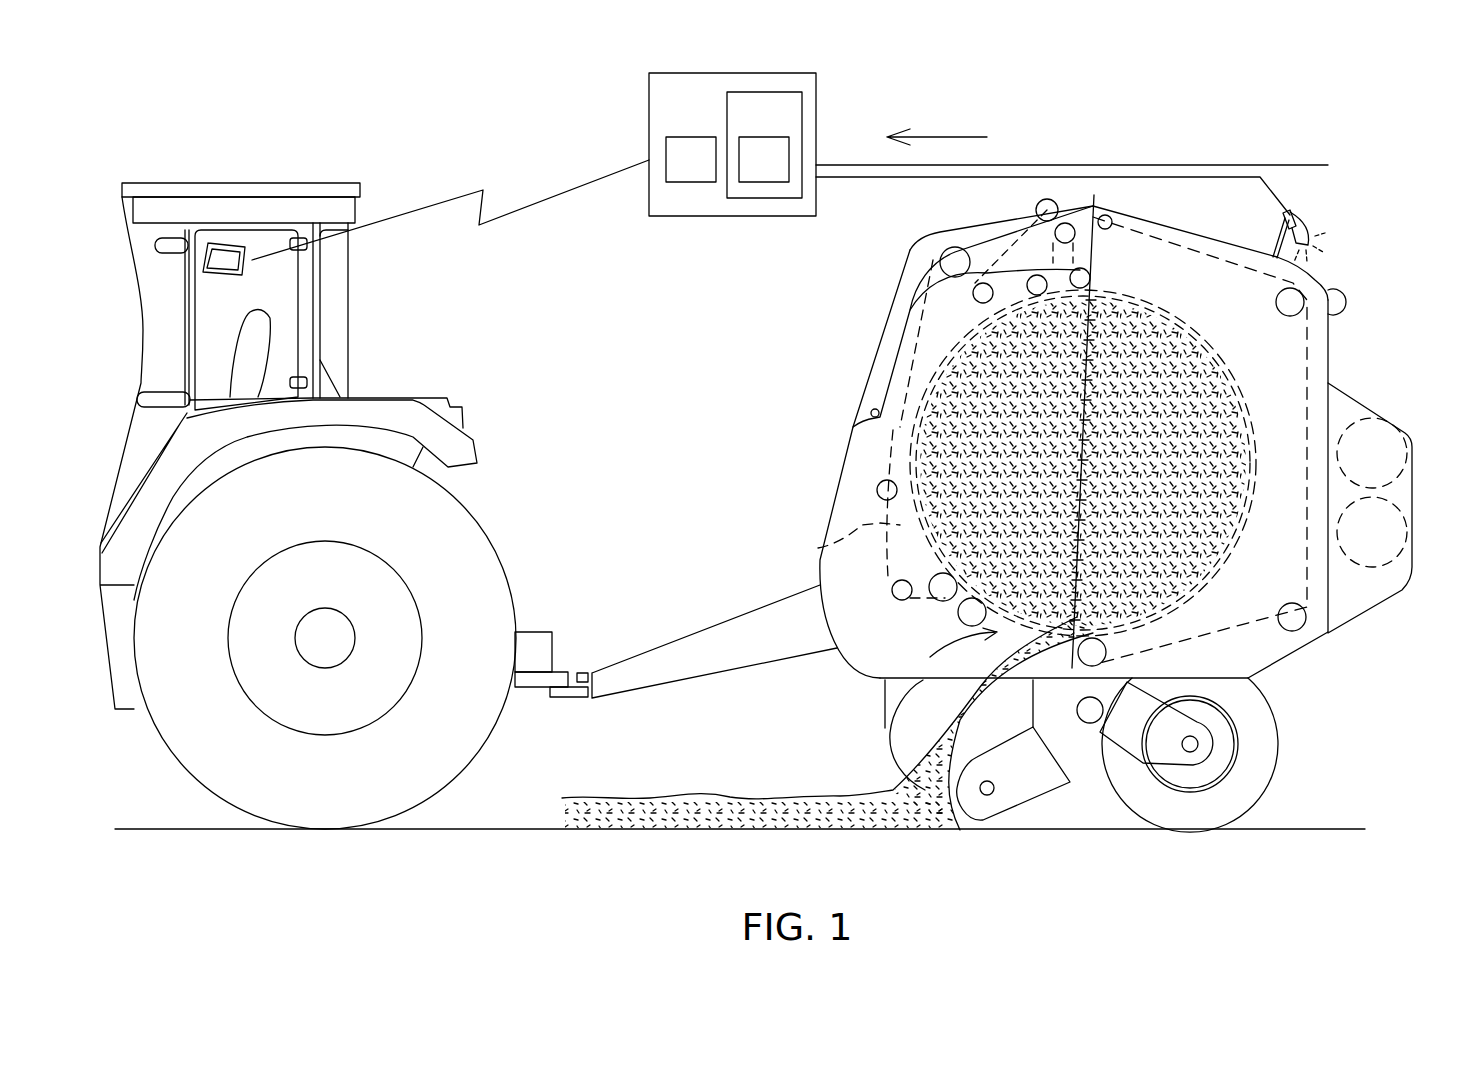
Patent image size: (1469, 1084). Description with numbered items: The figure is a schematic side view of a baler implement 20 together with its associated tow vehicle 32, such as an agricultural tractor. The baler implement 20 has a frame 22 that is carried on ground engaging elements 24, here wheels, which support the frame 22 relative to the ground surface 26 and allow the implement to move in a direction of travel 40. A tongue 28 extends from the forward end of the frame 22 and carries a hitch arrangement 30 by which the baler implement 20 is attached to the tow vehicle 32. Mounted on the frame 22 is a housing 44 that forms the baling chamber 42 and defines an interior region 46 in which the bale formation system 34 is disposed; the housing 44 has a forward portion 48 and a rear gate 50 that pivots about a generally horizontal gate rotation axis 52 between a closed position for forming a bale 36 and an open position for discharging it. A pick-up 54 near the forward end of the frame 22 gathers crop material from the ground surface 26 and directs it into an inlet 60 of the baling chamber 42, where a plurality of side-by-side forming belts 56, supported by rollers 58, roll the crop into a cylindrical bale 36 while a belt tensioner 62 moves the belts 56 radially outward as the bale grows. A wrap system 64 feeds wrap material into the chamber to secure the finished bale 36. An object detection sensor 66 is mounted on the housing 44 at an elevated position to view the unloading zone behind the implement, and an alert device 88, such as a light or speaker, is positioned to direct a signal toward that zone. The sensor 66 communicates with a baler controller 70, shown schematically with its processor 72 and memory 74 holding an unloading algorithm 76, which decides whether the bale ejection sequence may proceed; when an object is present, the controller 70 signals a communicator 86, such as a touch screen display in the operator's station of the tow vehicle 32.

The baler implement 20 is at (1217, 114).
The frame 22 is at (1150, 743).
The ground engaging elements 24 is at (1265, 748).
The ground surface 26 is at (1330, 828).
The tongue 28 is at (680, 640).
The hitch arrangement 30 is at (560, 698).
The tow vehicle 32 is at (308, 466).
The bale formation system 34 is at (1182, 280).
The bale 36 is at (1215, 425).
The direction of travel 40 is at (988, 138).
The baling chamber 42 is at (1195, 315).
The housing 44 is at (888, 308).
The interior region 46 is at (1252, 618).
The forward portion 48 is at (845, 455).
The rear gate 50 is at (1330, 333).
The gate rotation axis 52 is at (1100, 213).
The pick-up 54 is at (985, 833).
The forming belts 56 is at (1320, 362).
The rollers 58 is at (950, 262).
The inlet 60 is at (887, 733).
The belt tensioner 62 is at (888, 375).
The wrap system 64 is at (1412, 495).
The object detection sensor 66 is at (1345, 300).
The baler controller 70 is at (675, 124).
The processor 72 is at (676, 173).
The memory 74 is at (747, 127).
The unloading algorithm 76 is at (747, 173).
The communicator 86 is at (225, 255).
The alert device 88 is at (1300, 213).